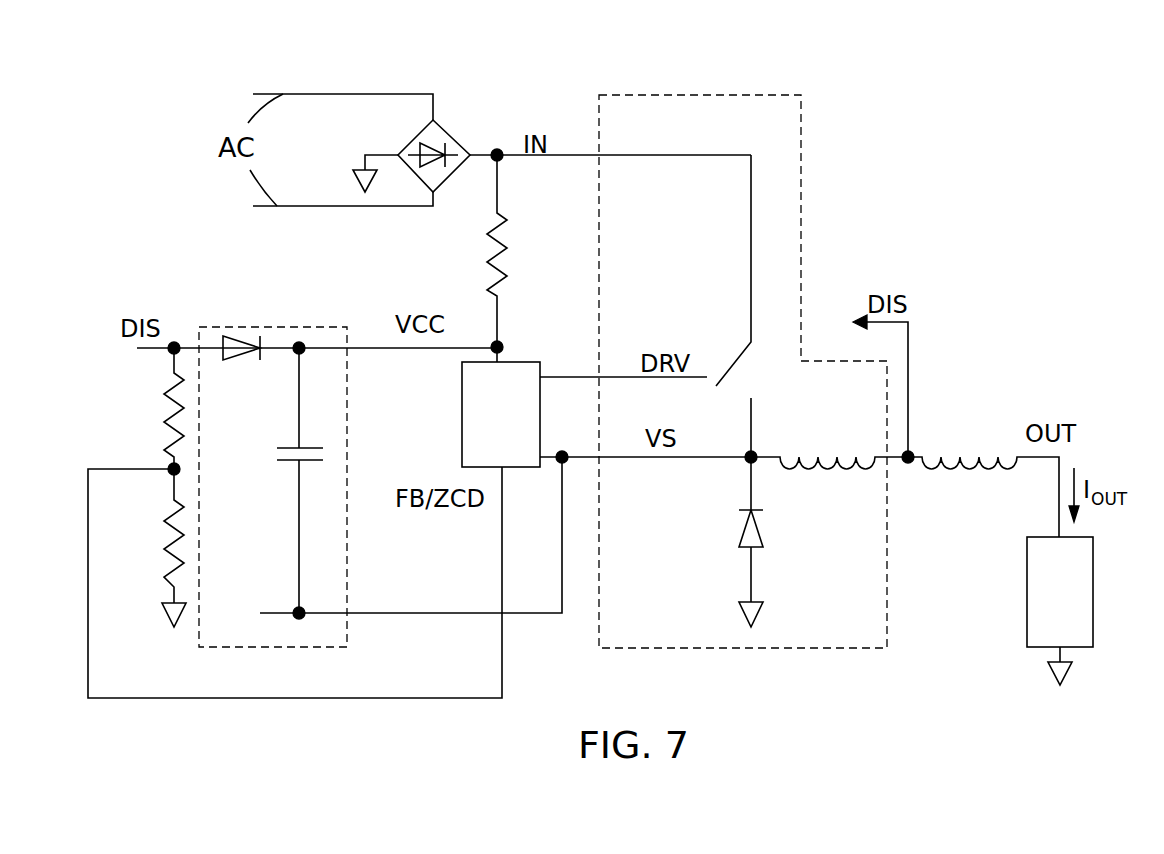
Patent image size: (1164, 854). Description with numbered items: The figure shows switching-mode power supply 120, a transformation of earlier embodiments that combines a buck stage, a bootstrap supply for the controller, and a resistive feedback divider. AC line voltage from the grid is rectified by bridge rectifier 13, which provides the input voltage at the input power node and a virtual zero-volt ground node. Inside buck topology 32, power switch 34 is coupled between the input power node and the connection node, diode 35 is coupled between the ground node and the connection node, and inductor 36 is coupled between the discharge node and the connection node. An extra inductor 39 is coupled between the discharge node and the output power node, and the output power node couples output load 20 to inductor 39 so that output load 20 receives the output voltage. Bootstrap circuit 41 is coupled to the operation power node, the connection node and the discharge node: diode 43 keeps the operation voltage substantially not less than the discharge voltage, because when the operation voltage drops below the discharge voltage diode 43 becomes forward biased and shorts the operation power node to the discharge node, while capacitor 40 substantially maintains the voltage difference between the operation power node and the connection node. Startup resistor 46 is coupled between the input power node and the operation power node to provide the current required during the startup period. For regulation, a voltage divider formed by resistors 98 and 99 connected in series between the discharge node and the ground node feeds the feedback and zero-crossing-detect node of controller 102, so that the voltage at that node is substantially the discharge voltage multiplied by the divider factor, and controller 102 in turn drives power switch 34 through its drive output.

The bridge rectifier 13 is at (417, 133).
The switching-mode power supply 120 is at (634, 45).
The buck topology 32 is at (700, 93).
The startup resistor 46 is at (495, 213).
The diode 43 is at (248, 342).
The bootstrap circuit 41 is at (330, 325).
The capacitor 40 is at (275, 452).
The resistor 98 is at (163, 443).
The resistor 99 is at (165, 548).
The controller 102 is at (519, 432).
The power switch 34 is at (753, 368).
The diode 35 is at (740, 535).
The inductor 36 is at (853, 480).
The inductor 39 is at (992, 482).
The output load 20 is at (1076, 616).